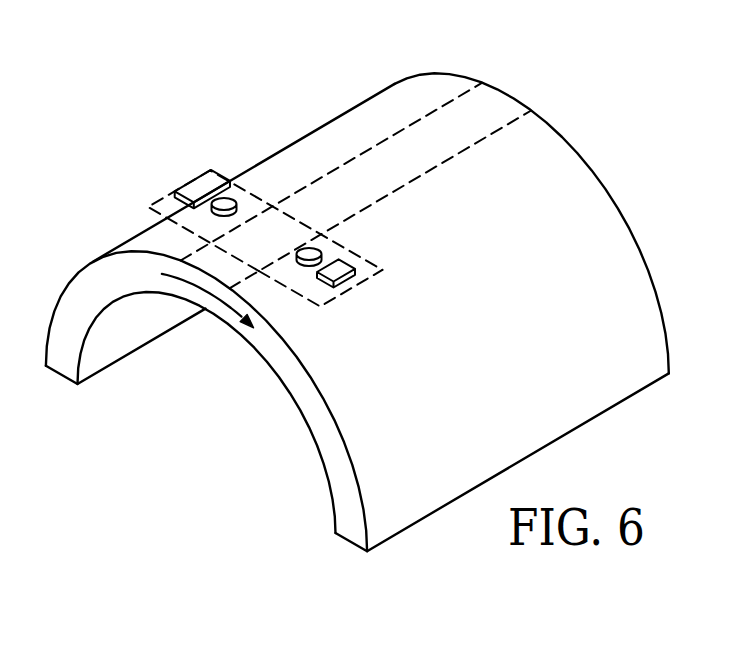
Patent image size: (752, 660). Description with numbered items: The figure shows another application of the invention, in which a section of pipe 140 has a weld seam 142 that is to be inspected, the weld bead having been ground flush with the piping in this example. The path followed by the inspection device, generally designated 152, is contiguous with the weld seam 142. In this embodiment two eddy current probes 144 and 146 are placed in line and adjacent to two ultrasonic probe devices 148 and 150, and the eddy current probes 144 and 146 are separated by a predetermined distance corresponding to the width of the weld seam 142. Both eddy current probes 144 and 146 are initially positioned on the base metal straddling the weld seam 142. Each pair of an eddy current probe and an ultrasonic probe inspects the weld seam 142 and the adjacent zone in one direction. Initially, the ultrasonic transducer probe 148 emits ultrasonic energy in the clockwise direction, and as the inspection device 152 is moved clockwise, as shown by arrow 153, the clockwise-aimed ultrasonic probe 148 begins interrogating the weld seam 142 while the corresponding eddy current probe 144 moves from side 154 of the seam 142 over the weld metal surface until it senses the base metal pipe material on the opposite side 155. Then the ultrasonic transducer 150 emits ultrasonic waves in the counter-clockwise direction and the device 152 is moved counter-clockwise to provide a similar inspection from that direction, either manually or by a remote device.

The section of pipe 140 is at (612, 424).
The weld seam 142 is at (487, 96).
The eddy current probe 144 is at (229, 198).
The eddy current probe 146 is at (314, 252).
The ultrasonic transducer probe 148 is at (193, 186).
The ultrasonic transducer 150 is at (353, 274).
The inspection device 152 is at (377, 267).
The arrow 153 is at (192, 306).
The side of the seam 154 is at (433, 110).
The opposite side 155 is at (449, 158).